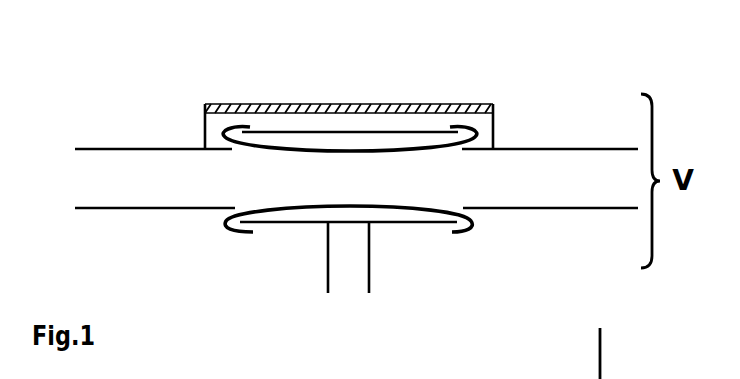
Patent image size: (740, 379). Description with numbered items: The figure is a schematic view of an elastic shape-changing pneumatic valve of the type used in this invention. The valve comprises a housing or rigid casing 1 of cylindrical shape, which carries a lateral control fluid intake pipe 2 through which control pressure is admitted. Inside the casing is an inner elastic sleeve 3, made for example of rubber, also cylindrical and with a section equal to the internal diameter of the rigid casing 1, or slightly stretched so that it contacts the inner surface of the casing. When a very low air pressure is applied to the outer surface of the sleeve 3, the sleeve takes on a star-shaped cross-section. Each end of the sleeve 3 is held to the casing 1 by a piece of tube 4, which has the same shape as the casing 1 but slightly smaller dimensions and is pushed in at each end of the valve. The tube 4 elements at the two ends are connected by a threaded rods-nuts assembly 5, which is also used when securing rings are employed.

The rigid casing 1 is at (357, 132).
The lateral control fluid intake pipe 2 is at (370, 272).
The inner elastic sleeve 3 is at (487, 104).
The piece of tube 4 is at (190, 211).
The threaded rods-nuts assembly 5 is at (243, 105).